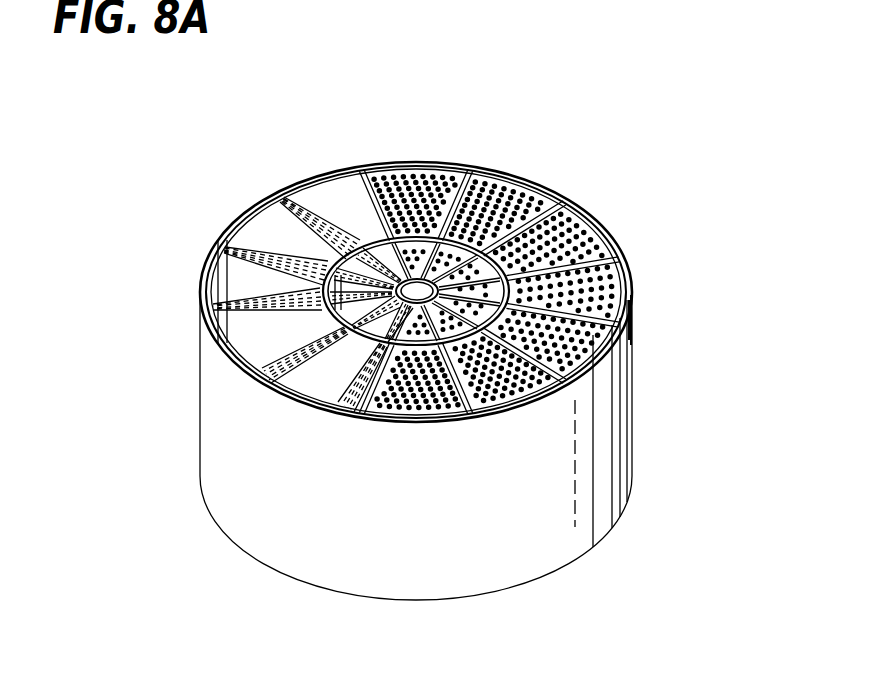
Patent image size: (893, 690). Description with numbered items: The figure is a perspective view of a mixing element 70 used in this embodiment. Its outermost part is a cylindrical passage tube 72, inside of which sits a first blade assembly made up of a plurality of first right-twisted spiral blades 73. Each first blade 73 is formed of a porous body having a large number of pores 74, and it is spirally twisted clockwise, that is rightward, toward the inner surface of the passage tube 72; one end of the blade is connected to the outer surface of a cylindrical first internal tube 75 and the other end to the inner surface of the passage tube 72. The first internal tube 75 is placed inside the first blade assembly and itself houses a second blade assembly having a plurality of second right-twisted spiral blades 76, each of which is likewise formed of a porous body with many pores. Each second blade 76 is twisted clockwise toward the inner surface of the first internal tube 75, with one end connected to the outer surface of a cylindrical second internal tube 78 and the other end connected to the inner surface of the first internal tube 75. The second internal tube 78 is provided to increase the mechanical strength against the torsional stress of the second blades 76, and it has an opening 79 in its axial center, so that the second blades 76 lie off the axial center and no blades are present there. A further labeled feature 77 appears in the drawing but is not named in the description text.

The mixing element 70 is at (587, 93).
The cylindrical passage tube 72 is at (600, 415).
The first right-twisted spiral blade 73 is at (625, 278).
The pores 74 is at (600, 225).
The cylindrical first internal tube 75 is at (328, 300).
The second right-twisted spiral blade 76 is at (493, 198).
The side wall portion 77 is at (628, 322).
The cylindrical second internal tube 78 is at (413, 284).
The opening 79 is at (418, 287).